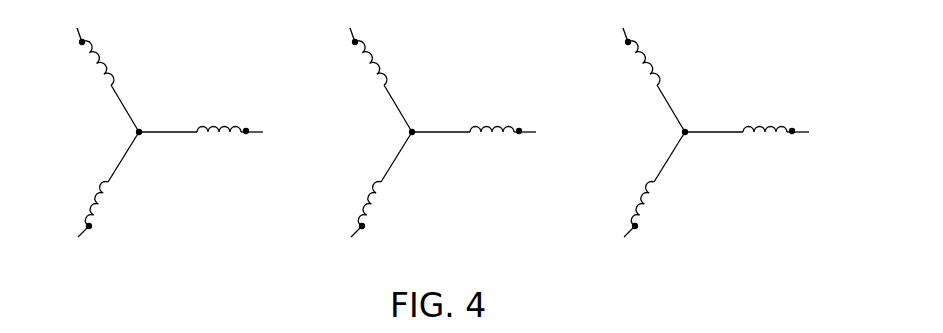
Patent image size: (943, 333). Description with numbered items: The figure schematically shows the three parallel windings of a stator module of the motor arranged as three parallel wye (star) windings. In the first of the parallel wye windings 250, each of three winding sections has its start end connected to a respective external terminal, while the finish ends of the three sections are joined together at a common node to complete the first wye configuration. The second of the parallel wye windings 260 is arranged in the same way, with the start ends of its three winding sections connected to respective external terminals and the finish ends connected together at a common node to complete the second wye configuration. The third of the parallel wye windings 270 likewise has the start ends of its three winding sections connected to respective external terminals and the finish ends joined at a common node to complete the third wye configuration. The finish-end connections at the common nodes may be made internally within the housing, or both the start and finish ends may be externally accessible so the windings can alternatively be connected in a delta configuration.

The first parallel wye winding 250 is at (199, 42).
The second parallel wye winding 260 is at (433, 134).
The third parallel wye winding 270 is at (706, 134).